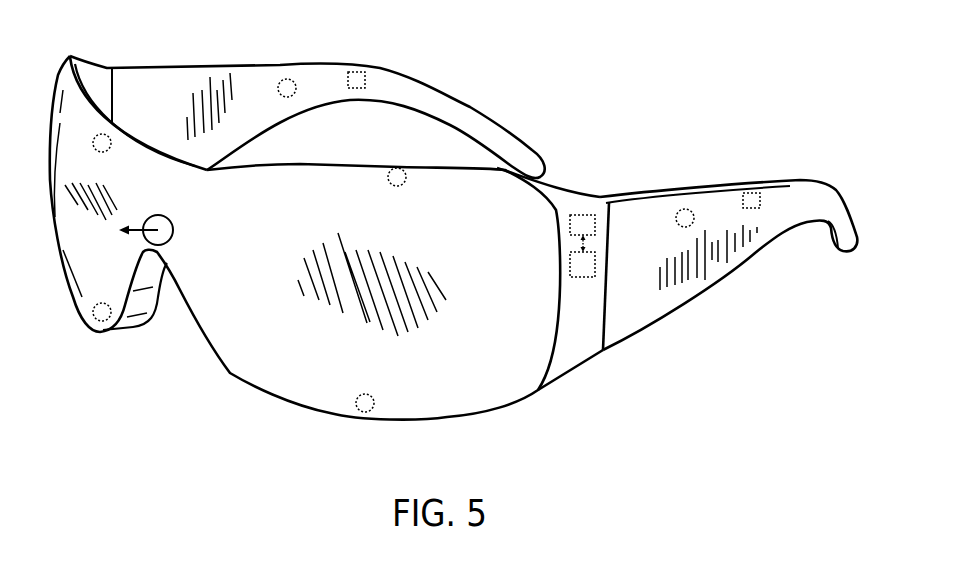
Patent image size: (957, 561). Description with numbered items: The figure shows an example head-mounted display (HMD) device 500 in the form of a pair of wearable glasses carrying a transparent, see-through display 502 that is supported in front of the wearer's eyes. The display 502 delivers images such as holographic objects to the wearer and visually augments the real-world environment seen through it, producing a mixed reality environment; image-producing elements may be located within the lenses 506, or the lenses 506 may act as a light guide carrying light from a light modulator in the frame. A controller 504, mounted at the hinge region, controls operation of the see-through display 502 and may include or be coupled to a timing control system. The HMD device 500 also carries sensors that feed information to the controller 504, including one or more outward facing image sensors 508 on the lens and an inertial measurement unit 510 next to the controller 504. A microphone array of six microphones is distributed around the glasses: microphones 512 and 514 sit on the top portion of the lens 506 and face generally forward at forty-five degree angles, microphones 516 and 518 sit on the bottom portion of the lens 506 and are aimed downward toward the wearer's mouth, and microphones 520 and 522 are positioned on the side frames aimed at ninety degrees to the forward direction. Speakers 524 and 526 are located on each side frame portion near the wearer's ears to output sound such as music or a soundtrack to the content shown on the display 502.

The head-mounted display device 500 is at (491, 52).
The transparent display 502 is at (253, 357).
The controller 504 is at (583, 214).
The lenses 506 is at (133, 303).
The outward facing image sensors 508 is at (173, 230).
The inertial measurement unit 510 is at (596, 261).
The microphone 512 is at (103, 134).
The microphone 514 is at (399, 168).
The microphone 516 is at (365, 412).
The microphone 518 is at (102, 321).
The microphone 520 is at (287, 79).
The microphone 522 is at (692, 211).
The speaker 524 is at (359, 72).
The speaker 526 is at (754, 193).